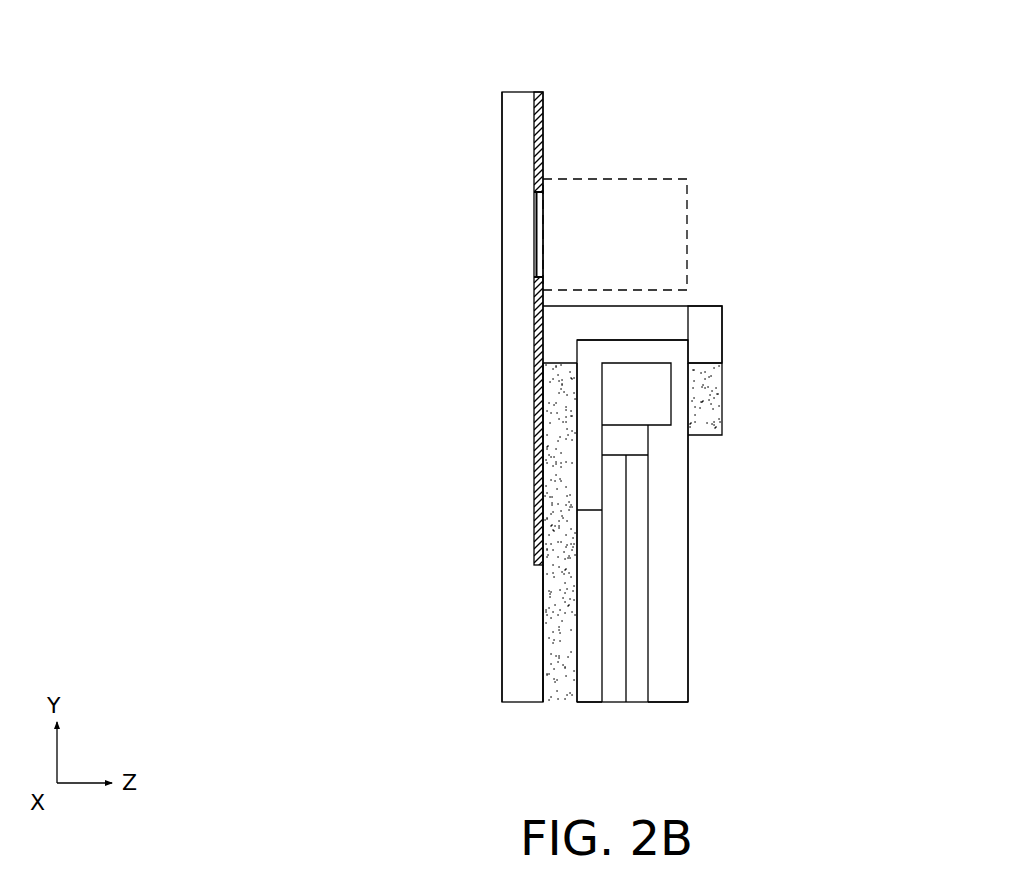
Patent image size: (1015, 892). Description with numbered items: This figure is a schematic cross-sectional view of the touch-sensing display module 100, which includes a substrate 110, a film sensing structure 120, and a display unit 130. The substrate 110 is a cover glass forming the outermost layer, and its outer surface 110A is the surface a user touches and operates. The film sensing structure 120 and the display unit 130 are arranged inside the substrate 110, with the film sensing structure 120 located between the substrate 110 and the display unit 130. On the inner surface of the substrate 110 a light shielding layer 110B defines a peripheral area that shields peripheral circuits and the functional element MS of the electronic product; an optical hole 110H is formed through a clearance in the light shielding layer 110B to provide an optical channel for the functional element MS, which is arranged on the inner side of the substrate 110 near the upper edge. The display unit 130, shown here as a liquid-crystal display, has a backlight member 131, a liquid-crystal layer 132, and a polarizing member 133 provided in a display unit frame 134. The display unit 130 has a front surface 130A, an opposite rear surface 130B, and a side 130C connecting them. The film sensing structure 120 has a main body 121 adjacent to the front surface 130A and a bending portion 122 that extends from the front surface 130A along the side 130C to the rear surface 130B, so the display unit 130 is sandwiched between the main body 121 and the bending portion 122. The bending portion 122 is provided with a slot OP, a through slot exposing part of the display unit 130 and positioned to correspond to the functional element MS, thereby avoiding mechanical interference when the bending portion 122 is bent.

The touch-sensing display module 100 is at (490, 88).
The substrate 110 is at (518, 512).
The outer surface 110A is at (502, 395).
The light shielding layer 110B is at (534, 138).
The optical hole 110H is at (537, 228).
The film sensing structure 120 is at (932, 86).
The main body 121 is at (555, 640).
The bending portion 122 is at (633, 303).
The display unit 130 is at (728, 764).
The front surface 130A is at (543, 590).
The rear surface 130B is at (688, 520).
The side 130C is at (672, 340).
The backlight member 131 is at (638, 702).
The liquid-crystal layer 132 is at (616, 702).
The polarizing member 133 is at (592, 702).
The display unit frame 134 is at (667, 702).
The functional element MS is at (655, 177).
The slot OP is at (702, 327).